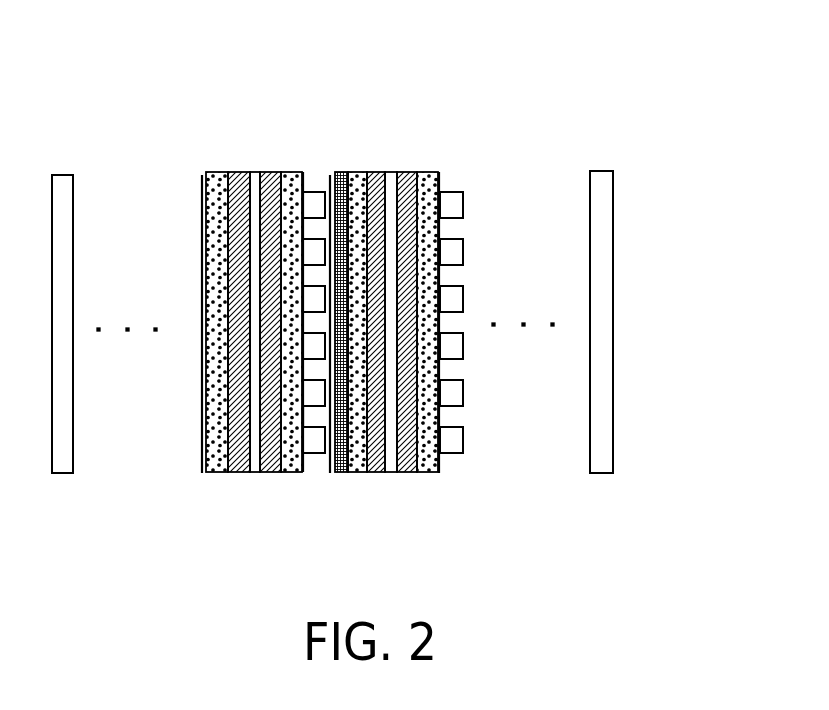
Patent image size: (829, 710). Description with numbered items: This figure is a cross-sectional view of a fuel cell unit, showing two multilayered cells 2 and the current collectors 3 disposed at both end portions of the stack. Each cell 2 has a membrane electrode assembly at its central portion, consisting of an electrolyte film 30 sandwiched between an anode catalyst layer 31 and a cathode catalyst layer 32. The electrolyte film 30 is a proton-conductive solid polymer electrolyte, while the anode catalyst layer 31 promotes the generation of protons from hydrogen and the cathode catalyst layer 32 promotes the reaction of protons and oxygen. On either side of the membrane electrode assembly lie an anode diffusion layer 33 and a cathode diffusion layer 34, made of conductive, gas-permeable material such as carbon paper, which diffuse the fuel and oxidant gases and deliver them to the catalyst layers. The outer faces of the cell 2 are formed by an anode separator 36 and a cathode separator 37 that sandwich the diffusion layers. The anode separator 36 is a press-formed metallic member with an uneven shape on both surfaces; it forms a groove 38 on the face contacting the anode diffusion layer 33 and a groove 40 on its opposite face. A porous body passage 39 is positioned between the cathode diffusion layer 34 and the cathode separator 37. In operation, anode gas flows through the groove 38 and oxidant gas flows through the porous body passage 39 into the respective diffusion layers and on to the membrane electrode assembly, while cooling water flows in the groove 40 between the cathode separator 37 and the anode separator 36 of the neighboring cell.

The cell 2 is at (189, 102).
The current collector 3 is at (63, 198).
The electrolyte film 30 is at (392, 172).
The anode catalyst layer 31 is at (408, 172).
The cathode catalyst layer 32 is at (374, 172).
The anode diffusion layer 33 is at (430, 172).
The cathode diffusion layer 34 is at (356, 172).
The anode separator 36 is at (445, 192).
The cathode separator 37 is at (330, 175).
The groove 38 is at (317, 443).
The porous body passage 39 is at (342, 172).
The groove 40 is at (311, 422).